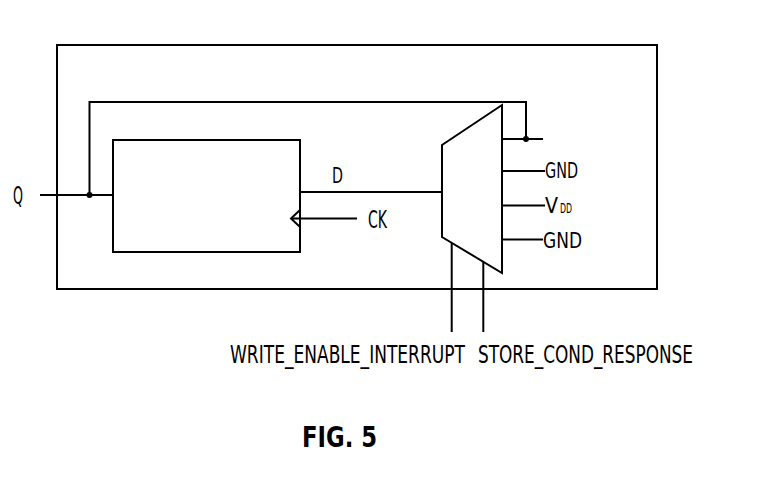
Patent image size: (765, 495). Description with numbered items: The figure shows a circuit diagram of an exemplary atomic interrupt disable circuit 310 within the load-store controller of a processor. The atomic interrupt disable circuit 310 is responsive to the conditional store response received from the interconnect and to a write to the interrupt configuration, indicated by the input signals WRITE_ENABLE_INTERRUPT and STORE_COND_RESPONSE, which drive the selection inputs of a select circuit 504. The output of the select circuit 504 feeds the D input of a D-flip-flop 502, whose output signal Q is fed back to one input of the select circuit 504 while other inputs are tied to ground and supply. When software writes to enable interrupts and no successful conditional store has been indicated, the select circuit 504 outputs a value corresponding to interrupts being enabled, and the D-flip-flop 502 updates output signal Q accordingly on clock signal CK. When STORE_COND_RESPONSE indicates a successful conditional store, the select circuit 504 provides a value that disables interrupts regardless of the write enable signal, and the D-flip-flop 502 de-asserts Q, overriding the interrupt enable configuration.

The atomic interrupt disable circuit 310 is at (99, 73).
The D-flip-flop 502 is at (112, 228).
The select circuit 504 is at (441, 147).